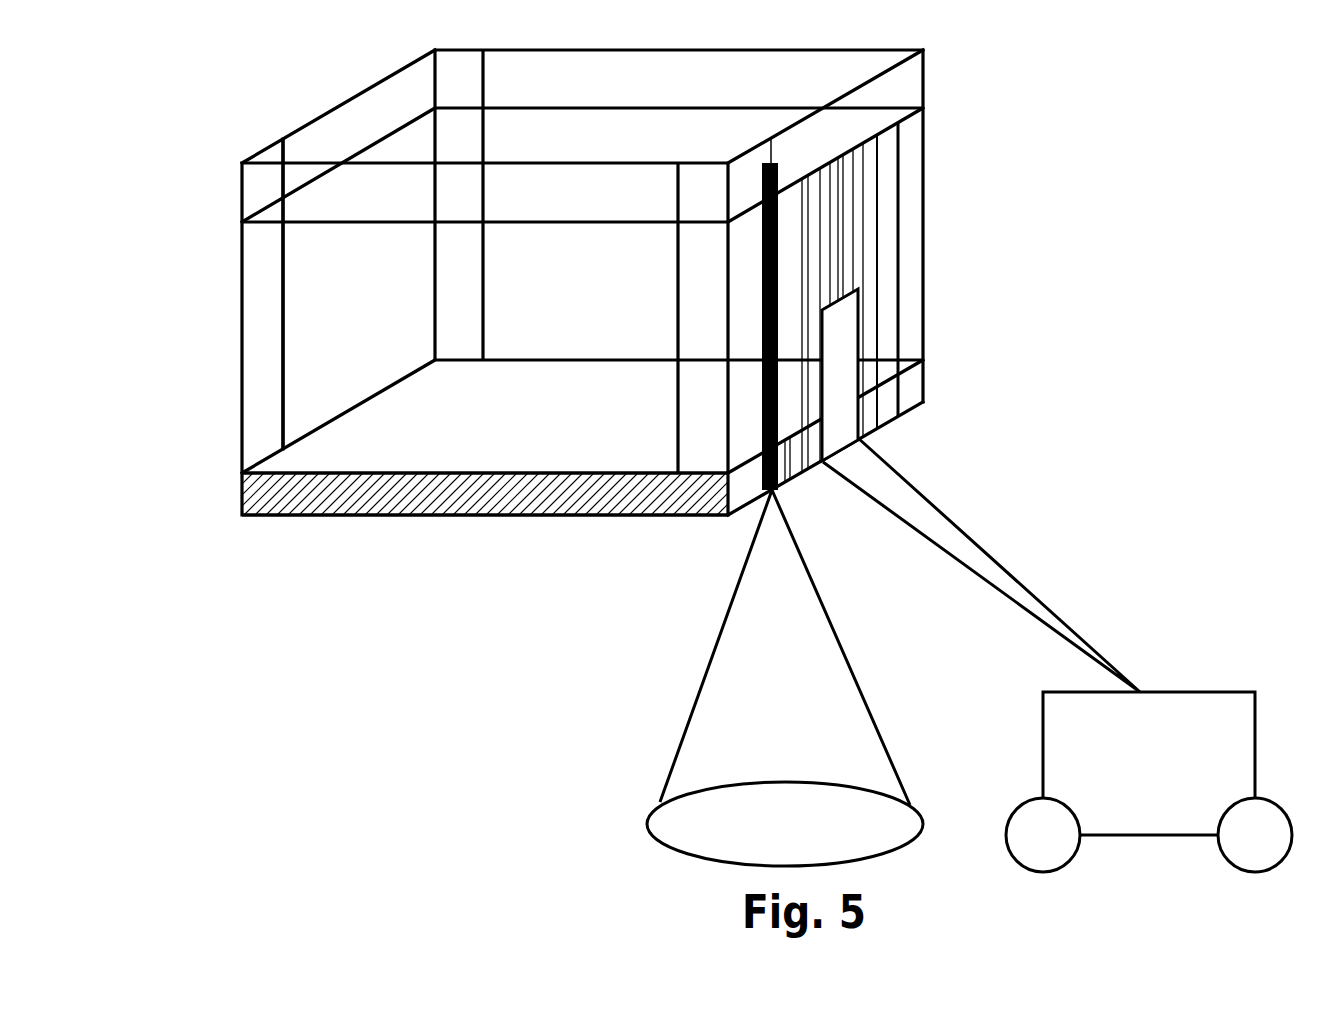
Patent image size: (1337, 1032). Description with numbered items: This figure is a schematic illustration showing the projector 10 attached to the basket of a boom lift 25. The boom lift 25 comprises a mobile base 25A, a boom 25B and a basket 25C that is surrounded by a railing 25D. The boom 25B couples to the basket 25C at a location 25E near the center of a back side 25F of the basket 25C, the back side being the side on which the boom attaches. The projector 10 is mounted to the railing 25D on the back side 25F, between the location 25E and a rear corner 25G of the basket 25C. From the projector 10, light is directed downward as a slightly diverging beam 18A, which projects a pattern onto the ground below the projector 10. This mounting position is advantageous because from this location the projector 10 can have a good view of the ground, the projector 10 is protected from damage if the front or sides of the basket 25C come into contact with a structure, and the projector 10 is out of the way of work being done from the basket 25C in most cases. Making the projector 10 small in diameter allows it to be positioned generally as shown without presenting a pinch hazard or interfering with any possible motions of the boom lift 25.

The boom lift 25 is at (1124, 240).
The mobile base 25A is at (1193, 698).
The boom 25B is at (983, 543).
The basket 25C is at (327, 313).
The railing 25D is at (795, 125).
The location 25E is at (843, 432).
The back side 25F is at (857, 217).
The rear corner 25G is at (695, 446).
The projector 10 is at (745, 460).
The diverging beam 18A is at (797, 833).